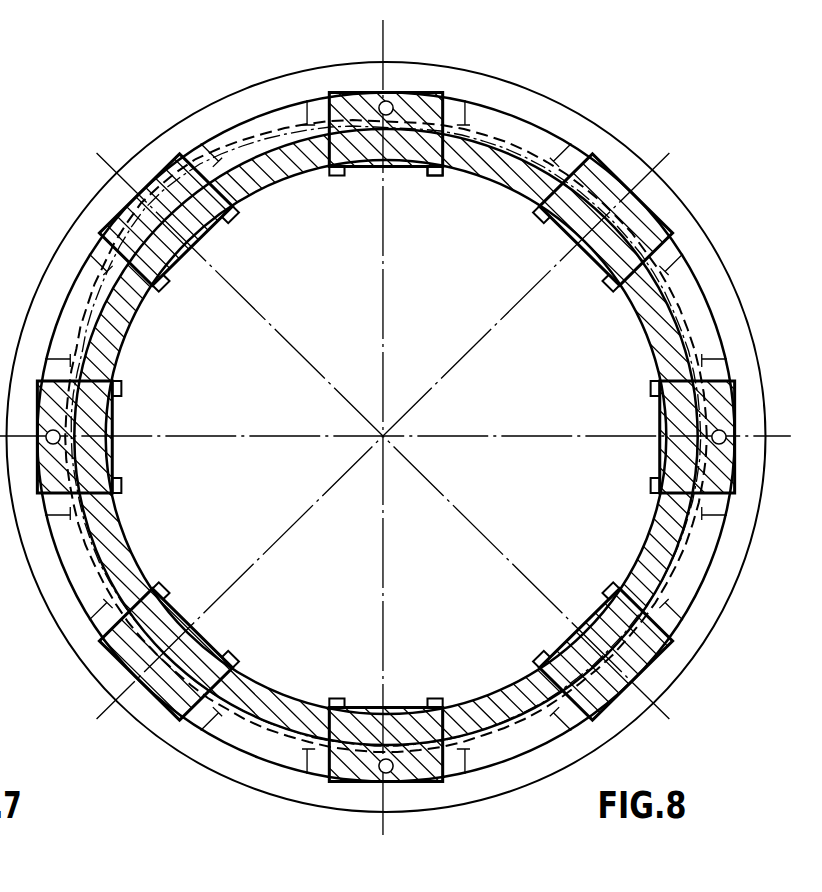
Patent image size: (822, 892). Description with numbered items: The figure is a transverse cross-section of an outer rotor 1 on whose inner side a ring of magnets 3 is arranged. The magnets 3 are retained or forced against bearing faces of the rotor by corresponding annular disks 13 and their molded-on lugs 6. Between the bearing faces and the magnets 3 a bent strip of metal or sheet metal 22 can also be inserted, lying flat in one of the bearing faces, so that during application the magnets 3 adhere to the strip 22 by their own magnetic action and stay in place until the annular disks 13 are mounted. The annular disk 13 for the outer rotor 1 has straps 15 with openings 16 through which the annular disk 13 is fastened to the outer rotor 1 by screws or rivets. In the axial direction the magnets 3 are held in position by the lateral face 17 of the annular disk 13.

The outer rotor 1 is at (386, 437).
The magnets 3 is at (385, 414).
The molded-on lugs 6 is at (429, 222).
The annular disk 13 is at (385, 437).
The straps 15 is at (431, 145).
The openings 16 is at (433, 64).
The lateral face 17 is at (385, 390).
The bent strip of metal or sheet metal 22 is at (386, 412).